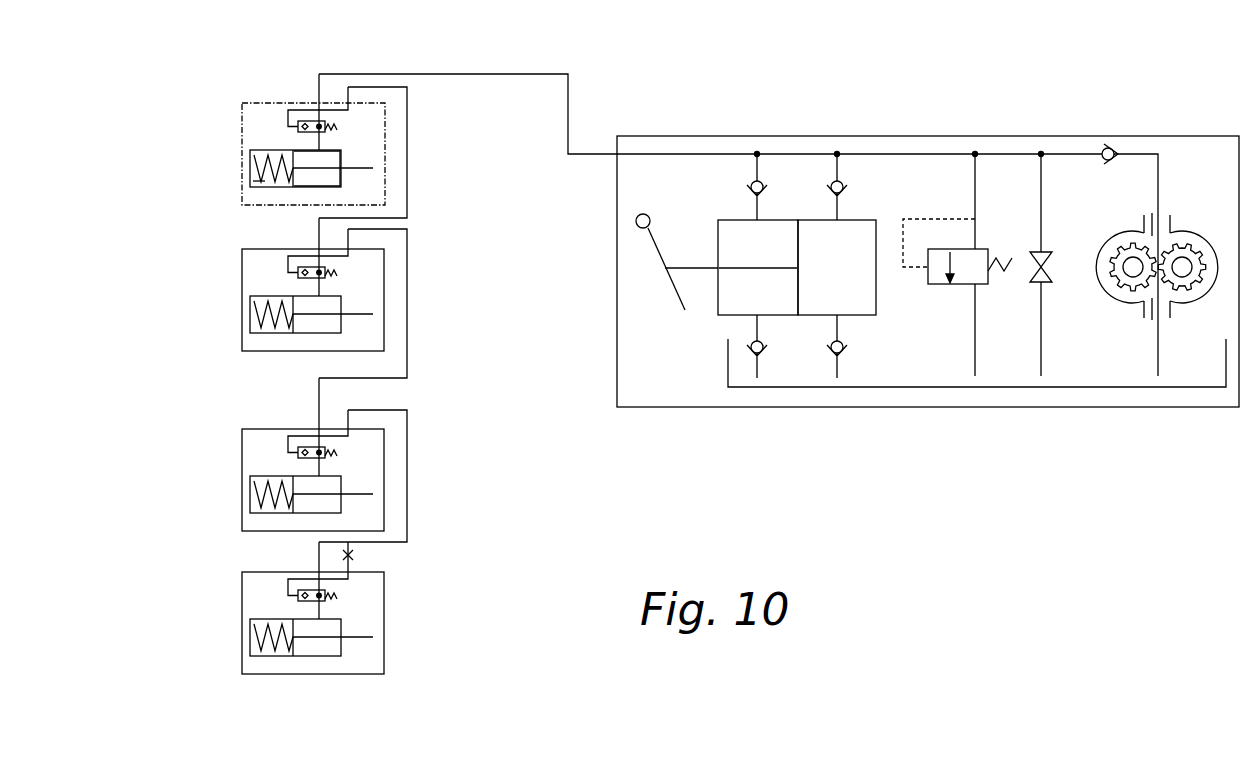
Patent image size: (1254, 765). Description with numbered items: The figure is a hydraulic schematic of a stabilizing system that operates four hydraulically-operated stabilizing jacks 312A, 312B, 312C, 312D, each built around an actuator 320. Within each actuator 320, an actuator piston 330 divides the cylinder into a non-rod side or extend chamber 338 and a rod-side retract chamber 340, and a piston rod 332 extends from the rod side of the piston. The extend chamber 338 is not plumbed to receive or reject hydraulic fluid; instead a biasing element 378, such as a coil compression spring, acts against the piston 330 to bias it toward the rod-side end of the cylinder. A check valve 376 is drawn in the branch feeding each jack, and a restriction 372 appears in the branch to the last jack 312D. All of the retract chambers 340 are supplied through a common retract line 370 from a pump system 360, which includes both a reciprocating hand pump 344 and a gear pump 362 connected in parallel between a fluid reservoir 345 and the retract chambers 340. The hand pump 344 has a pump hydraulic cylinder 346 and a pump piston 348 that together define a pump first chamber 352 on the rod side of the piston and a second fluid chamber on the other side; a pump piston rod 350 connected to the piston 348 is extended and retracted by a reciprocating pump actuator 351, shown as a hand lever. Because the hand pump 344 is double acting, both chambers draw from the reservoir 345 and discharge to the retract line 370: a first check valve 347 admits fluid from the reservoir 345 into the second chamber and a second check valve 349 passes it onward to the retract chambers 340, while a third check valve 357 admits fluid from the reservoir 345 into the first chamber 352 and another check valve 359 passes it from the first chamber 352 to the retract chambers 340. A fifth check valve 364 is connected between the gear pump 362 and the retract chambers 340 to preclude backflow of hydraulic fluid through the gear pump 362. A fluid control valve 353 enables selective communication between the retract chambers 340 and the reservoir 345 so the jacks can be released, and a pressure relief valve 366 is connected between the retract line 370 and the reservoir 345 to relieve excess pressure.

The stabilizing jack 312A is at (338, 153).
The stabilizing jack 312B is at (385, 280).
The stabilizing jack 312C is at (385, 471).
The stabilizing jack 312D is at (380, 607).
The actuator 320 is at (316, 153).
The actuator piston 330 is at (316, 158).
The valve stem 332 is at (365, 167).
The non-rod side (extend chamber) 338 is at (263, 181).
The retract chamber 340 is at (330, 177).
The pilot operated check valve 376 is at (300, 120).
The biasing element 378 is at (265, 150).
The retract line 370 is at (573, 92).
The flow restriction 372 is at (355, 555).
The pump system 360 is at (894, 279).
The fluid reservoir 345 is at (1203, 388).
The reciprocating hand pump 344 is at (764, 282).
The pump hydraulic cylinder 346 is at (735, 240).
The pump piston 348 is at (798, 220).
The pump first chamber 352 is at (738, 297).
The check valve 359 is at (763, 180).
The second check valve 349 is at (843, 182).
The third check valve 357 is at (752, 357).
The first check valve 347 is at (855, 384).
The pump piston rod 350 is at (688, 267).
The reciprocating pump actuator 351 is at (646, 232).
The pressure relief valve 366 is at (980, 258).
The fluid control valve 353 is at (1047, 267).
The fifth check valve 364 is at (1108, 147).
The gear pump 362 is at (1195, 232).